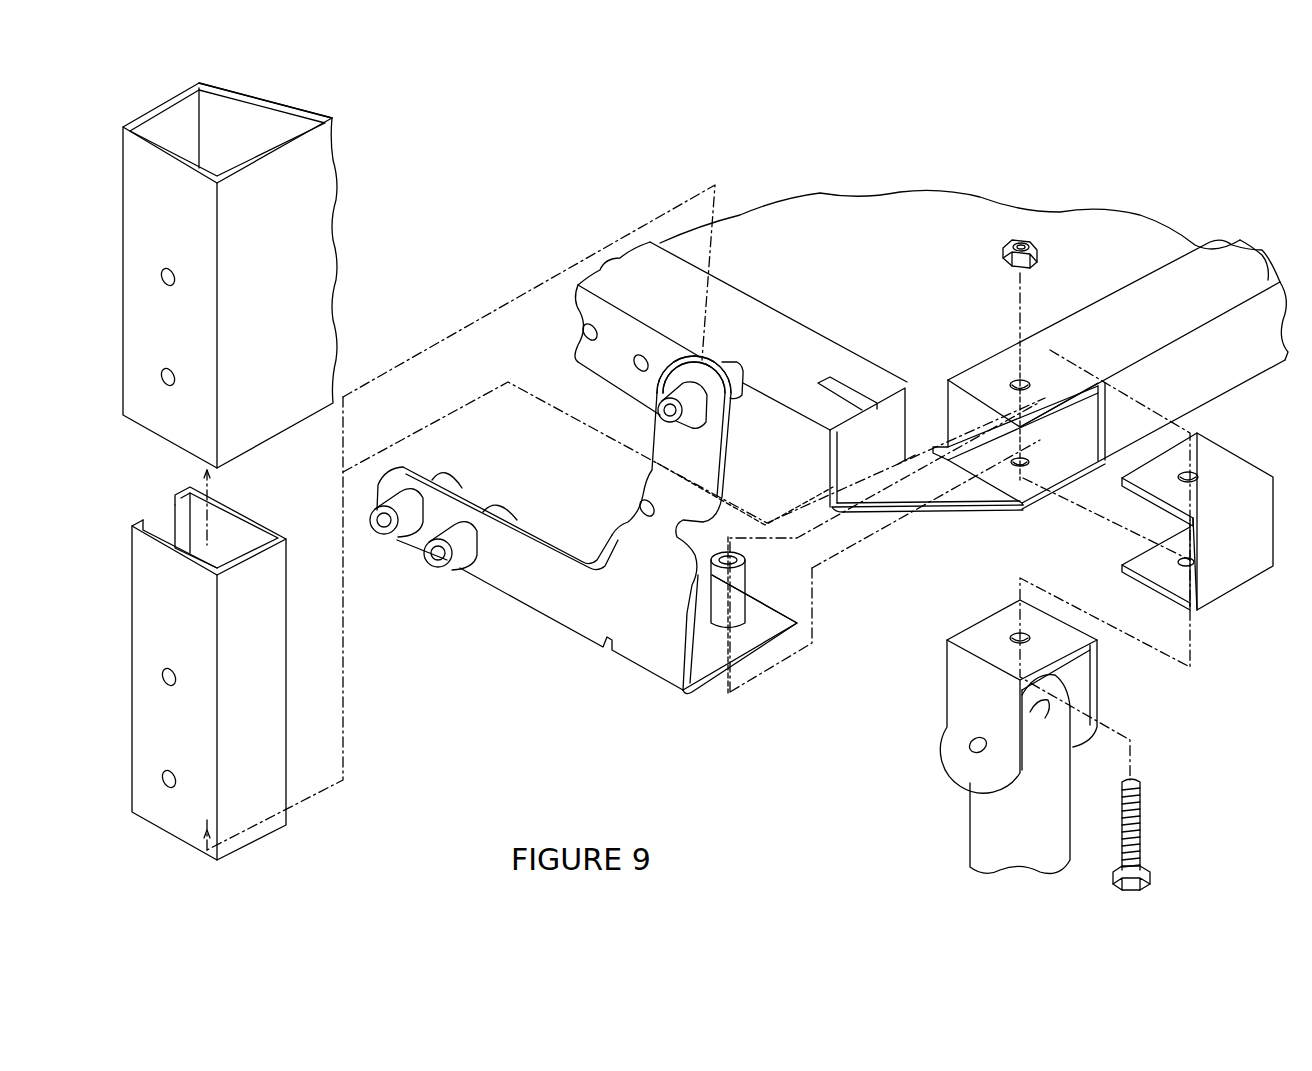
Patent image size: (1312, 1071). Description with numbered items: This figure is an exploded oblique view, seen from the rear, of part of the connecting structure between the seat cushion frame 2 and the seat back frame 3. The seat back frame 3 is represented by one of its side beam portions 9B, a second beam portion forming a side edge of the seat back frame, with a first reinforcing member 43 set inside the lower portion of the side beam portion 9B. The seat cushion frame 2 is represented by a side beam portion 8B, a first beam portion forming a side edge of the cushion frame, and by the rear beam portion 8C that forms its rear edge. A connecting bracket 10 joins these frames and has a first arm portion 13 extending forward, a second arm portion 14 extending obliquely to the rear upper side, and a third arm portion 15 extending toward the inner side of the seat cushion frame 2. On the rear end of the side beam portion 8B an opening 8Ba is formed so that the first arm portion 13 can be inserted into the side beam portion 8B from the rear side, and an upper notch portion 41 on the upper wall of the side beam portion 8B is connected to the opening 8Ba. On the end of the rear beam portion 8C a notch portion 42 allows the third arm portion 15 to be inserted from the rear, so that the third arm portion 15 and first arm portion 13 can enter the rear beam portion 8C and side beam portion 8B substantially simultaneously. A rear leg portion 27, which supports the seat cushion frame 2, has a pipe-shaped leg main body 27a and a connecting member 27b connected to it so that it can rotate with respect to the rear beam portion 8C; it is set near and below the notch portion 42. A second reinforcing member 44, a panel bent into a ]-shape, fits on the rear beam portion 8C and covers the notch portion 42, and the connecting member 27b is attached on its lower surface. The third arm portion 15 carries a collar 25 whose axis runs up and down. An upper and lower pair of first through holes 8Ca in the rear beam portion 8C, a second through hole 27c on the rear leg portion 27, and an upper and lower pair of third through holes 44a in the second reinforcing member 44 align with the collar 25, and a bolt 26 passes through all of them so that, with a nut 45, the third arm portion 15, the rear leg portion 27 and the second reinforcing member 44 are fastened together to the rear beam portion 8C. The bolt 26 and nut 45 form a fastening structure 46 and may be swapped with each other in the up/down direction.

The seat cushion frame 2 is at (1235, 245).
The seat back frame 3 is at (338, 205).
The side beam portions 9B is at (236, 97).
The first reinforcing member 43 is at (257, 537).
The side beam portions 8B is at (600, 383).
The opening 8Ba is at (860, 458).
The rear beam portion 8C is at (1258, 372).
The first through holes 8Ca is at (1015, 378).
The connecting bracket 10 is at (702, 357).
The first arm portion 13 is at (492, 575).
The second arm portion 14 is at (737, 400).
The third arm portion 15 is at (722, 675).
The collar 25 is at (746, 556).
The bolt 26 is at (1119, 863).
The rear leg portion 27 is at (977, 729).
The leg main body 27a is at (975, 830).
The connecting member 27b is at (975, 710).
The second through hole 27c is at (1013, 633).
The upper notch portion 41 is at (843, 383).
The notch portion 42 is at (1068, 398).
The second reinforcing member 44 is at (1240, 578).
The third through holes 44a is at (1195, 475).
The nut 45 is at (1038, 250).
The fastening structure 46 is at (1152, 866).